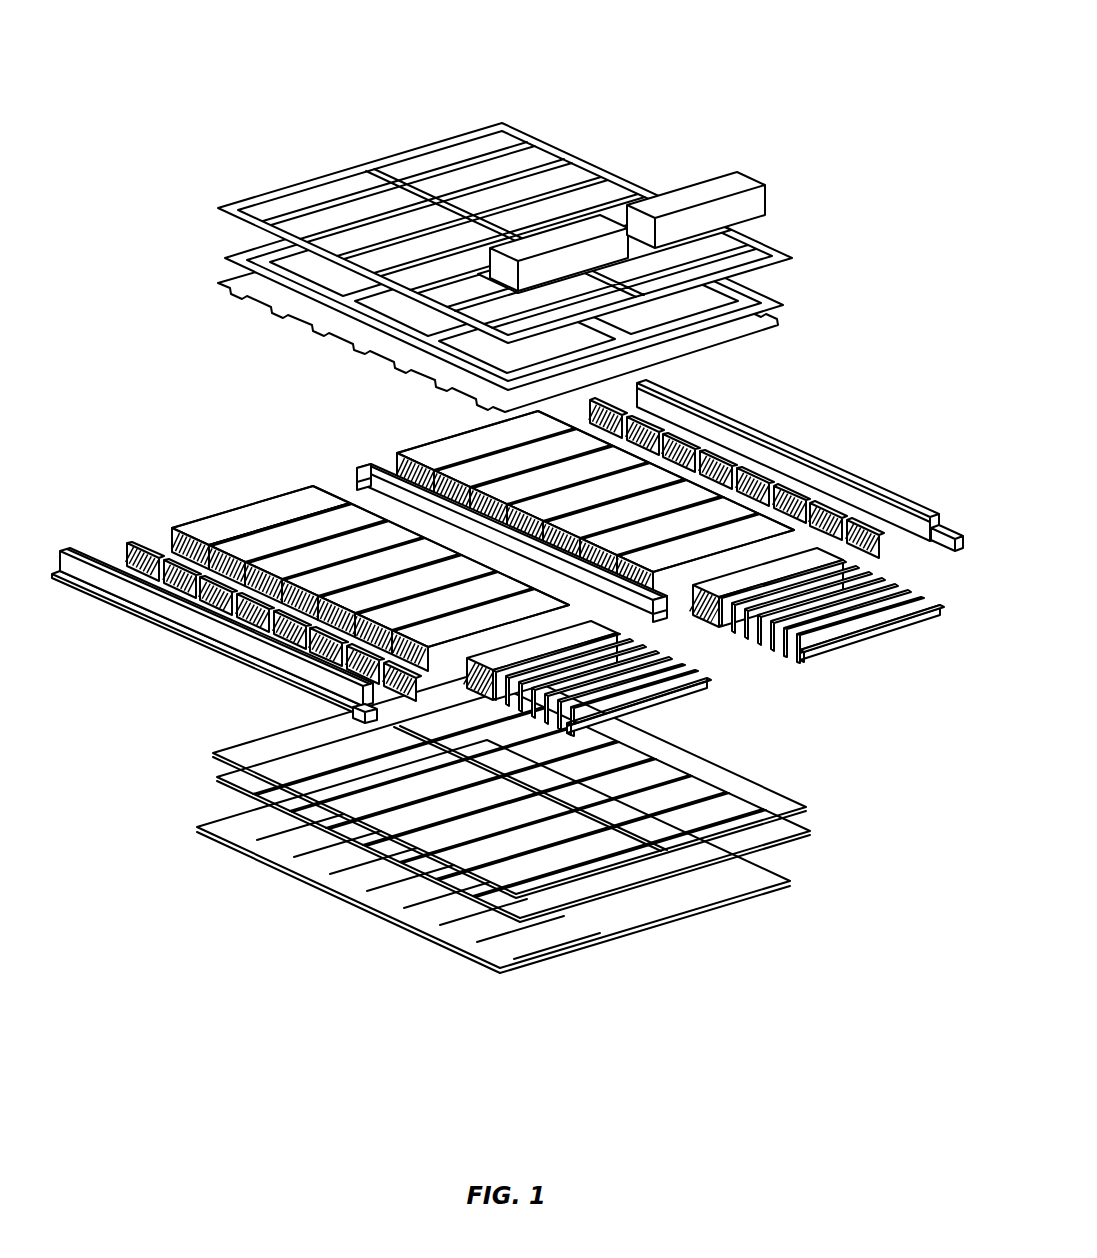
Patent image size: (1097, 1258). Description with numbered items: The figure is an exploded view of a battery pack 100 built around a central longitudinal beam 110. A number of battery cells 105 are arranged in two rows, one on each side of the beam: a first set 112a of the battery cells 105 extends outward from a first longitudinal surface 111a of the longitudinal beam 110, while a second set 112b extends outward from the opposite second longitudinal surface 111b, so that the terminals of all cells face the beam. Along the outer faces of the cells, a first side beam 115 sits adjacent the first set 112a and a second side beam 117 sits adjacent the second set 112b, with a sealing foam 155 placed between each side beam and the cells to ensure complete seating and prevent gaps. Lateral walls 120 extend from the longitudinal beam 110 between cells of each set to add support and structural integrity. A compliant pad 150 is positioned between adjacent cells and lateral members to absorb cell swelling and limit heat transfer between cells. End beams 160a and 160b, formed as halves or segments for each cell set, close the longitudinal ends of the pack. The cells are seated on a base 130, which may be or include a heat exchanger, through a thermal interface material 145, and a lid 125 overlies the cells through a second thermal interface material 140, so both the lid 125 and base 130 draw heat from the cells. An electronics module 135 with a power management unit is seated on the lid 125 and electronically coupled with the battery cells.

The battery pack 100 is at (231, 72).
The battery cells 105 is at (762, 643).
The longitudinal beam 110 is at (513, 532).
The first longitudinal surface 111a is at (366, 488).
The second longitudinal surface 111b is at (657, 611).
The first set of battery cells 112a is at (207, 517).
The second set of battery cells 112b is at (480, 430).
The first side beam 115 is at (273, 668).
The second side beam 117 is at (800, 448).
The lateral walls 120 is at (857, 518).
The lid 125 is at (548, 157).
The base 130 is at (765, 867).
The electronics module 135 is at (763, 187).
The thermal interface material 140 is at (785, 306).
The thermal interface material 145 is at (790, 808).
The compliant pad 150 is at (795, 650).
The sealing foam 155 is at (127, 543).
The end beam 160a is at (908, 628).
The end beam 160b is at (257, 502).